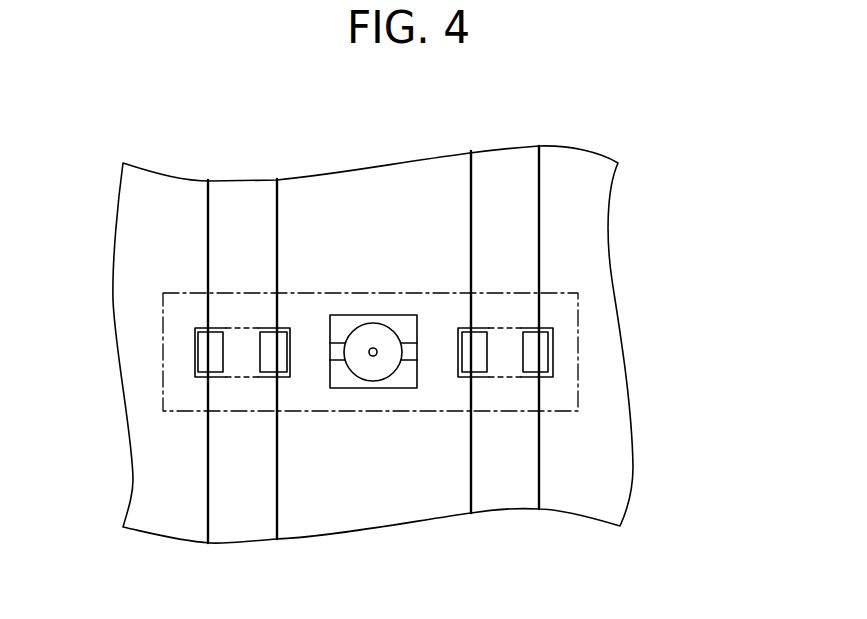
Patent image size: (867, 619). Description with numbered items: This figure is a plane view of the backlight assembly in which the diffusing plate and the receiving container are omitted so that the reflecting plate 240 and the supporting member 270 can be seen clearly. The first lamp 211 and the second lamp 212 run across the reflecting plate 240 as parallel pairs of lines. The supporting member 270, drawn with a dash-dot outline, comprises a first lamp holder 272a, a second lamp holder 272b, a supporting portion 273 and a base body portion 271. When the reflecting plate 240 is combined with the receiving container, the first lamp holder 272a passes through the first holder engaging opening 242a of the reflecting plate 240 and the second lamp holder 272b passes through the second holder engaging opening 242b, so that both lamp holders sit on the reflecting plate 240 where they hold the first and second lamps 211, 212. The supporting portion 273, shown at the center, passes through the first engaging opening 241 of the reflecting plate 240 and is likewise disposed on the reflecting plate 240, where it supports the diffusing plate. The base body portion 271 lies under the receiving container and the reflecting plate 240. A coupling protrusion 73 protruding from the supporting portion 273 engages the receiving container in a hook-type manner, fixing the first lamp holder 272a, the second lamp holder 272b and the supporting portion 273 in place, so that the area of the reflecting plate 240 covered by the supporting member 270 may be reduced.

The reflecting plate 240 is at (590, 215).
The first lamp 211 is at (238, 192).
The second lamp 212 is at (502, 160).
The first engaging opening 241 is at (375, 315).
The first holder engaging opening 242a is at (282, 327).
The second holder engaging opening 242b is at (468, 327).
The supporting member 270 is at (590, 321).
The base body portion 271 is at (578, 358).
The first lamp holder 272a is at (203, 352).
The second lamp holder 272b is at (547, 357).
The coupling protrusion 73 is at (333, 352).
The supporting portion 273 is at (372, 375).